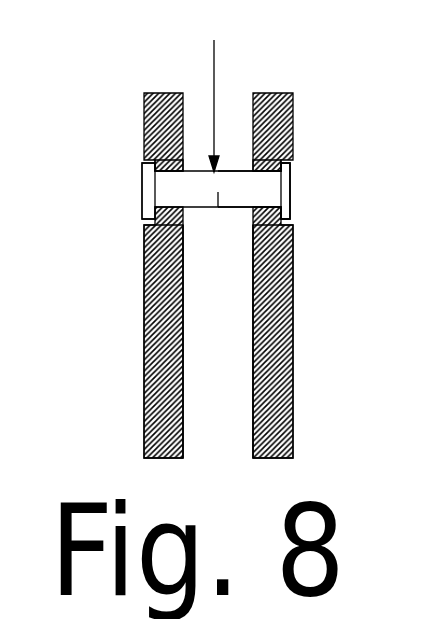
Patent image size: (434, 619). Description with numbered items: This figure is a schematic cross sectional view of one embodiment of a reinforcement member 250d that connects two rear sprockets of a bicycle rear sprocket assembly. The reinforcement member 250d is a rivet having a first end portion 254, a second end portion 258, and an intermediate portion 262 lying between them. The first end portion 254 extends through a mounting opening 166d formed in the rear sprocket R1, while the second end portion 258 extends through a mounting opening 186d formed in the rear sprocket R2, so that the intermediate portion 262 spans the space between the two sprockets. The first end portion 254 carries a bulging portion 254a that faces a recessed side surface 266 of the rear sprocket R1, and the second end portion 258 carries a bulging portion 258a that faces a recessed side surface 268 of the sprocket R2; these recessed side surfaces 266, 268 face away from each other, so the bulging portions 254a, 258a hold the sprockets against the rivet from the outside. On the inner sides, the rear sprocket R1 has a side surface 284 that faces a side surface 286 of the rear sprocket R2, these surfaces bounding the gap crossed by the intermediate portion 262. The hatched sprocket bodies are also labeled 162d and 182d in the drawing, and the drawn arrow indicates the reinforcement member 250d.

The reinforcement member 250d is at (215, 90).
The rear sprocket R1 is at (144, 110).
The rear sprocket R2 is at (293, 112).
The mounting opening 166d is at (181, 176).
The mounting opening 186d is at (255, 176).
The first end portion 254 is at (142, 190).
The bulging portion 254a is at (142, 165).
The second end portion 258 is at (268, 190).
The bulging portion 258a is at (290, 163).
The intermediate portion 262 is at (218, 207).
The first lower member 162d is at (144, 245).
The second lower member 182d is at (290, 238).
The recessed side surface 266 is at (144, 345).
The recessed side surface 268 is at (293, 350).
The side surface 284 is at (218, 358).
The side surface 286 is at (253, 447).